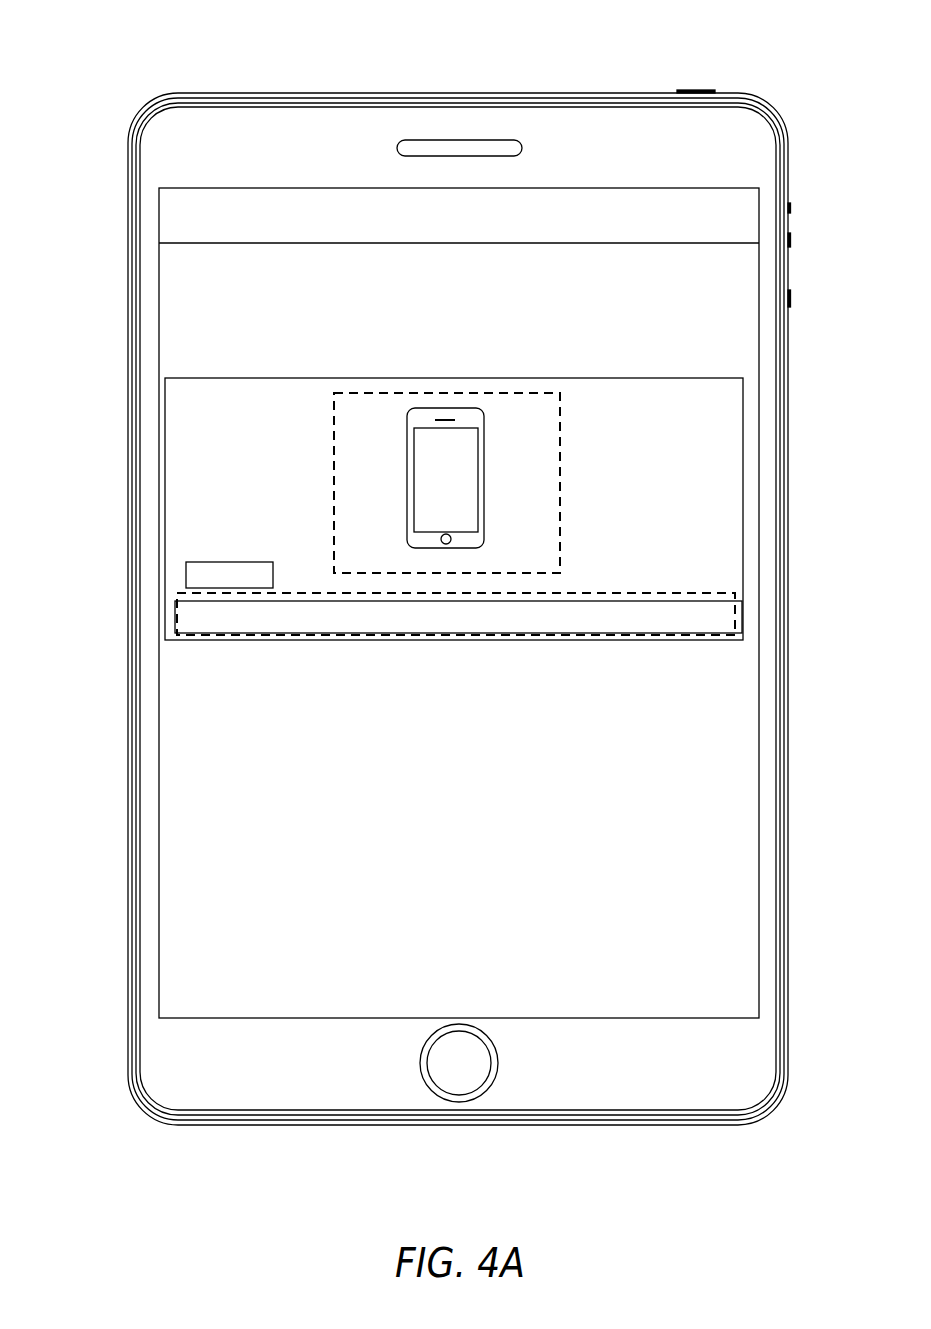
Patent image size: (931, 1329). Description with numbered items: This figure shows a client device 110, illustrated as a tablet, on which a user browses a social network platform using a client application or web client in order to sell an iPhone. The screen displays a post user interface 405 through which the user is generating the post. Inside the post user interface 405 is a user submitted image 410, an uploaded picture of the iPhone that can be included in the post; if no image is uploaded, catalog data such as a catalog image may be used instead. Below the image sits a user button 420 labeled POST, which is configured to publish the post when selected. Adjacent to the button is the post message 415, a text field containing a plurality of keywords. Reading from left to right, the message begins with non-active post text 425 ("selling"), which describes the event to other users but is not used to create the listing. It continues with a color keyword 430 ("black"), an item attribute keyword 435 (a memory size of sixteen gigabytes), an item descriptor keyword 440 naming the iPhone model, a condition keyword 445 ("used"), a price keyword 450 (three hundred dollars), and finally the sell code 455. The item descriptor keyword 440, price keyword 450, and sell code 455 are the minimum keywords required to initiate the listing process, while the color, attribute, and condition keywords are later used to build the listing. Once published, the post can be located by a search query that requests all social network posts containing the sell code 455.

The client device 110 is at (142, 77).
The post user interface 405 is at (207, 411).
The user submitted image 410 is at (333, 536).
The post message 415 is at (716, 590).
The user button 420 is at (184, 572).
The non-active post text 425 is at (228, 638).
The color keyword 430 is at (281, 638).
The item attribute keyword 435 is at (347, 638).
The item descriptor keyword 440 is at (407, 638).
The condition keyword 445 is at (505, 638).
The price keyword 450 is at (578, 638).
The sell code 455 is at (682, 638).